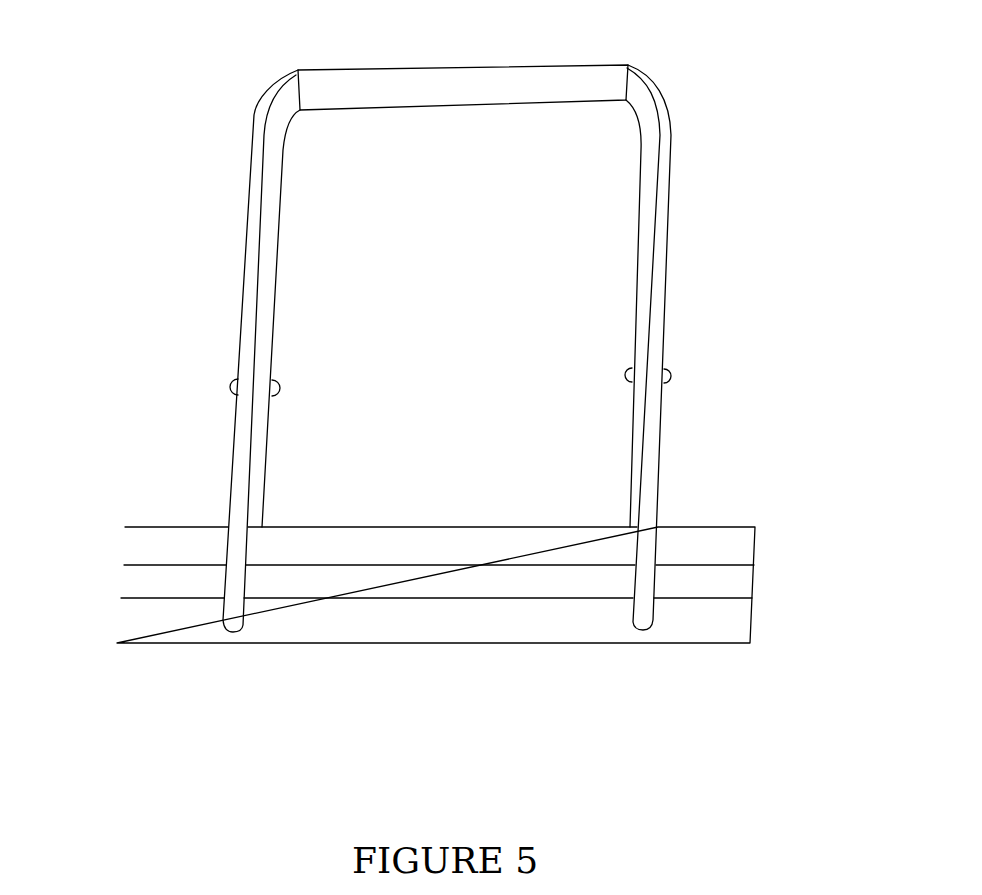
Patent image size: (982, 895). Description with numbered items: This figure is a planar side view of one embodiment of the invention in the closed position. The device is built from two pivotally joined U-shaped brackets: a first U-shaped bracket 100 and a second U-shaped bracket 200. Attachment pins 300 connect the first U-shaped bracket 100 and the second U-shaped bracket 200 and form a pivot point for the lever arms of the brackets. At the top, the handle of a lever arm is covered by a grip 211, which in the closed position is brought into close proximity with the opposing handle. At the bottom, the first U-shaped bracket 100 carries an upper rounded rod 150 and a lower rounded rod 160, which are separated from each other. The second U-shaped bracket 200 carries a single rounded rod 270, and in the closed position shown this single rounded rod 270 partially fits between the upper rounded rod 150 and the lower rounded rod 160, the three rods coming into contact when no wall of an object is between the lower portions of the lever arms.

The first U-shaped bracket 100 is at (671, 223).
The grip 211 is at (435, 82).
The second U-shaped bracket 200 is at (640, 258).
The attachment pins 300 is at (230, 386).
The single rounded rod 270 is at (433, 585).
The upper rounded rod 150 is at (757, 548).
The lower rounded rod 160 is at (752, 620).